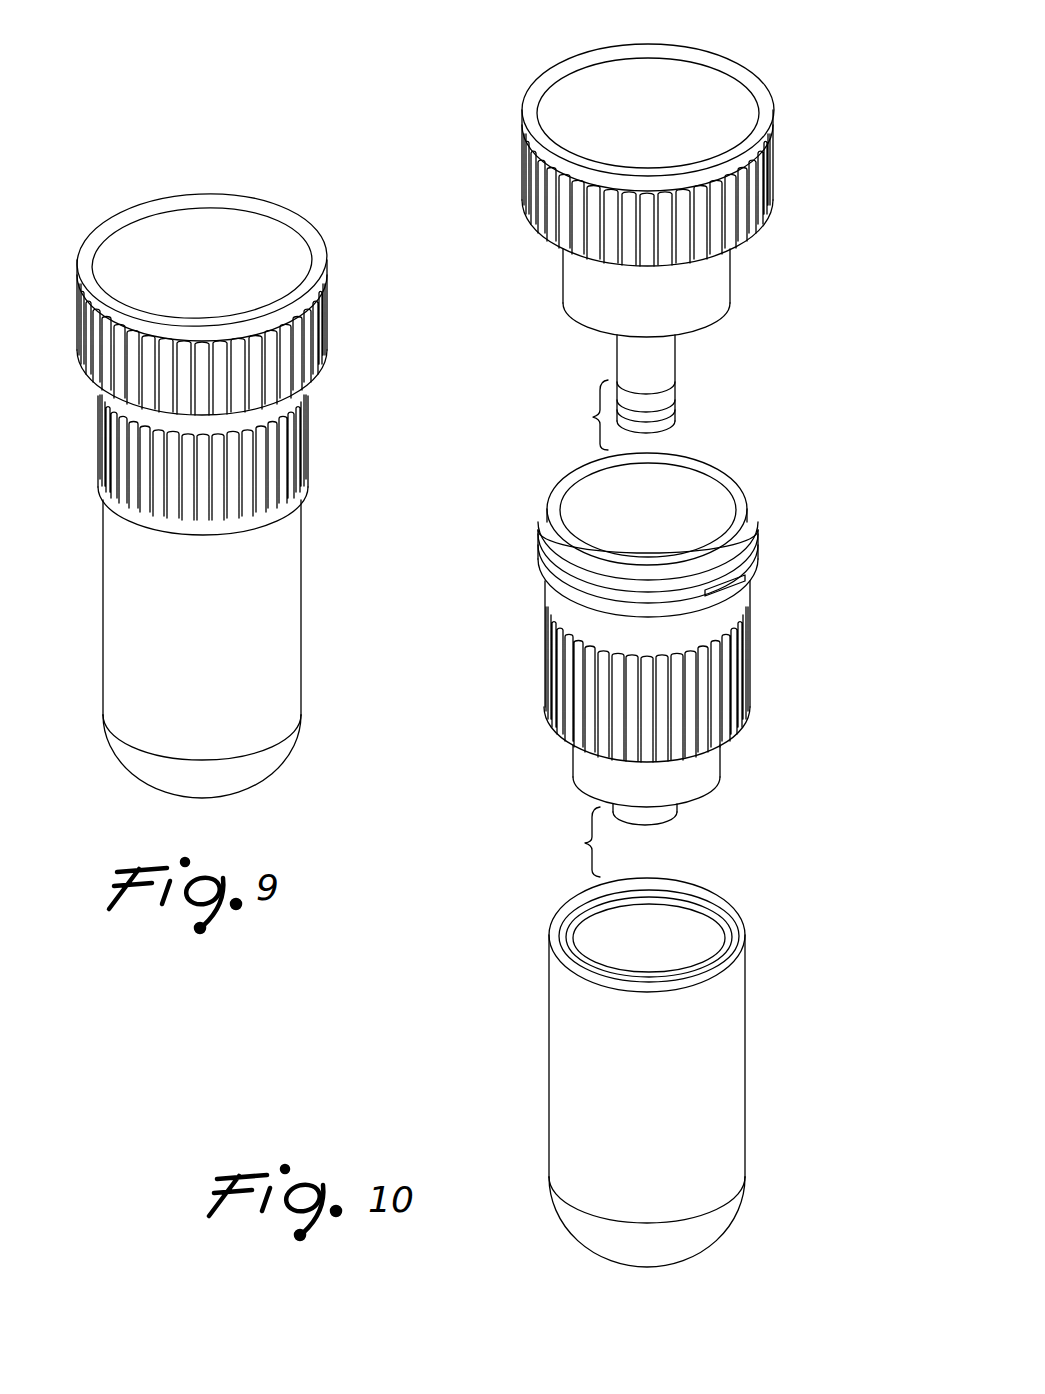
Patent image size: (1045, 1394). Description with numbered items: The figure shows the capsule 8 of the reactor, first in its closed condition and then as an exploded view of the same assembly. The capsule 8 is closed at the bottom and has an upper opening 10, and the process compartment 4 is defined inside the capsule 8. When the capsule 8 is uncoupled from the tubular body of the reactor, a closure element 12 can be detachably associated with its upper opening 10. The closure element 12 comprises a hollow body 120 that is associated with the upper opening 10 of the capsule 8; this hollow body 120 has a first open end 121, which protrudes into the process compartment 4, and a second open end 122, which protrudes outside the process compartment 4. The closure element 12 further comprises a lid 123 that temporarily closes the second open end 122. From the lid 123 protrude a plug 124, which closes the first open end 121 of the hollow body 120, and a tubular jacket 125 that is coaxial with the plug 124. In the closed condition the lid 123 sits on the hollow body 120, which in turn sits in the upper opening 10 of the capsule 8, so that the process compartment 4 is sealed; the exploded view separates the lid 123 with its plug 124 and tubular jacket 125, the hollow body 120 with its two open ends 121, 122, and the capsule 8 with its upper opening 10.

In FIG. 10, the process compartment 4 is at (634, 947).
In FIG. 9, the capsule 8 is at (104, 653).
In FIG. 10, the capsule 8 is at (549, 1050).
In FIG. 10, the upper opening 10 is at (740, 920).
In FIG. 9, the closure element 12 is at (318, 200).
In FIG. 10, the closure element 12 is at (793, 108).
In FIG. 9, the hollow body 120 is at (122, 457).
In FIG. 10, the hollow body 120 is at (563, 668).
In FIG. 10, the first open end 121 is at (655, 823).
In FIG. 10, the second open end 122 is at (700, 503).
In FIG. 9, the lid 123 is at (186, 228).
In FIG. 10, the lid 123 is at (558, 100).
In FIG. 10, the plug 124 is at (653, 401).
In FIG. 10, the tubular jacket 125 is at (713, 283).